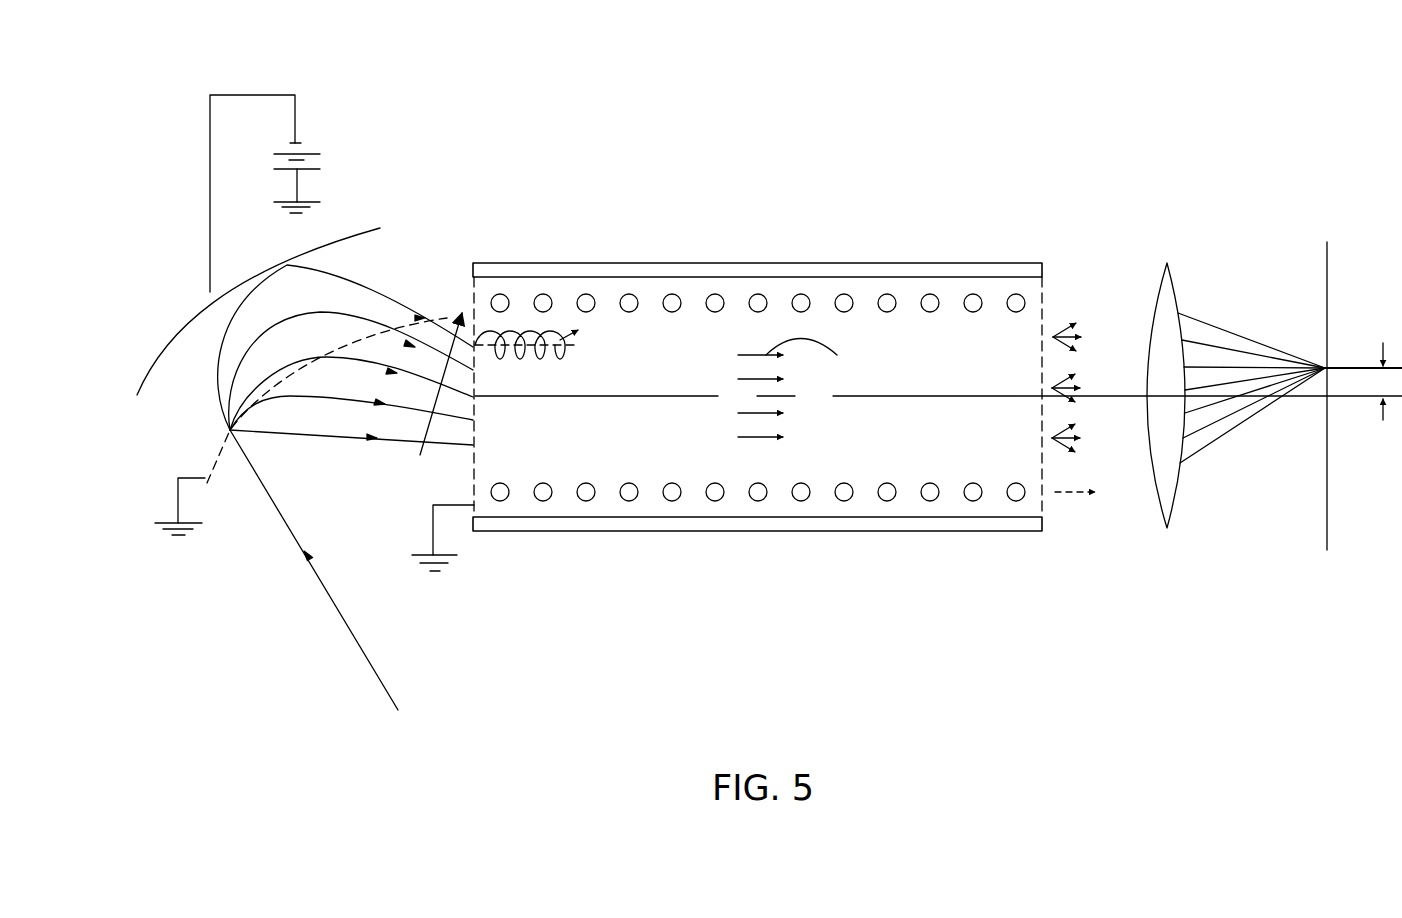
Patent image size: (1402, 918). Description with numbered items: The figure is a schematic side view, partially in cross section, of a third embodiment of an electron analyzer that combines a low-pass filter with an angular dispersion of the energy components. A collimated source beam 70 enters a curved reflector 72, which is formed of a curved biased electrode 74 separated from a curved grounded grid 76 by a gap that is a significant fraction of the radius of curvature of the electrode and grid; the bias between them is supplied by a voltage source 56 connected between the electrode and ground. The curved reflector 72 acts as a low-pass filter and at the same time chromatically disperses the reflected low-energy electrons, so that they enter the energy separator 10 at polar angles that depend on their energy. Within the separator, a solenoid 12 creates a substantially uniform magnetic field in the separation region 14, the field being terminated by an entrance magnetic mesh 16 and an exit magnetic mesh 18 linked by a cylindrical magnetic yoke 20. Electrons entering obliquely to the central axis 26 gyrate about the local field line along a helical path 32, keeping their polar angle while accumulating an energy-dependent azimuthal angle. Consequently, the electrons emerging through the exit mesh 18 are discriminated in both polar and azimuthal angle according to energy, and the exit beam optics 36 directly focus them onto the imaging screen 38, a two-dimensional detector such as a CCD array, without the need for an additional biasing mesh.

The energy separator 10 is at (660, 163).
The solenoid 12 is at (800, 293).
The separation region 14 is at (904, 450).
The magnetic mesh 16 is at (475, 413).
The exit magnetic mesh 18 is at (1043, 303).
The cylindrical magnetic yoke 20 is at (720, 263).
The central axis 26 is at (682, 395).
The helical path 32 is at (528, 332).
The beam optics 36 is at (1172, 290).
The imaging screen 38 is at (1328, 275).
The bias voltage source 56 is at (307, 141).
The source beam 70 is at (365, 652).
The curved reflector 72 is at (428, 160).
The curved biased electrode 74 is at (156, 357).
The curved grounded grid 76 is at (213, 462).